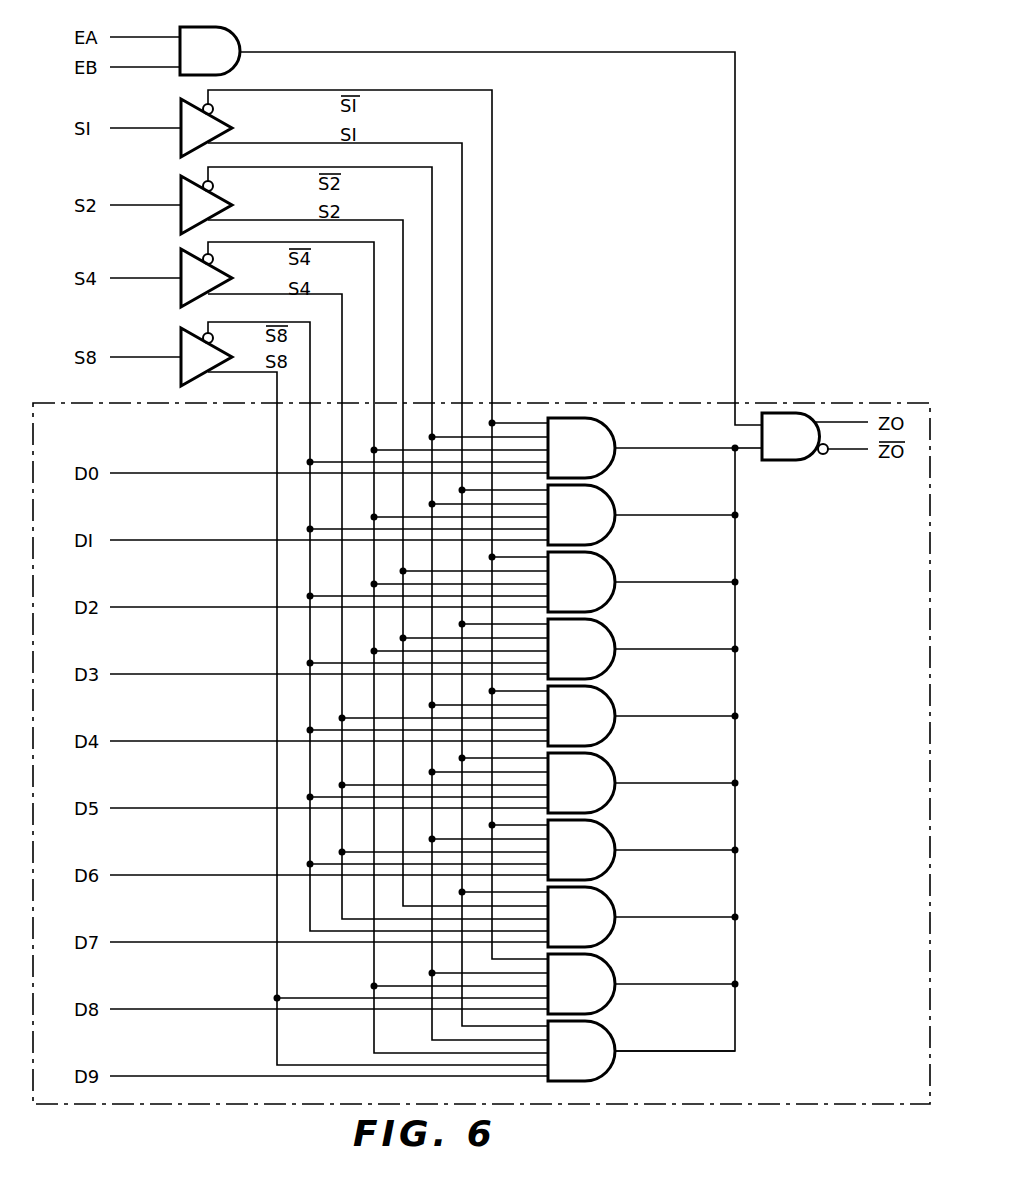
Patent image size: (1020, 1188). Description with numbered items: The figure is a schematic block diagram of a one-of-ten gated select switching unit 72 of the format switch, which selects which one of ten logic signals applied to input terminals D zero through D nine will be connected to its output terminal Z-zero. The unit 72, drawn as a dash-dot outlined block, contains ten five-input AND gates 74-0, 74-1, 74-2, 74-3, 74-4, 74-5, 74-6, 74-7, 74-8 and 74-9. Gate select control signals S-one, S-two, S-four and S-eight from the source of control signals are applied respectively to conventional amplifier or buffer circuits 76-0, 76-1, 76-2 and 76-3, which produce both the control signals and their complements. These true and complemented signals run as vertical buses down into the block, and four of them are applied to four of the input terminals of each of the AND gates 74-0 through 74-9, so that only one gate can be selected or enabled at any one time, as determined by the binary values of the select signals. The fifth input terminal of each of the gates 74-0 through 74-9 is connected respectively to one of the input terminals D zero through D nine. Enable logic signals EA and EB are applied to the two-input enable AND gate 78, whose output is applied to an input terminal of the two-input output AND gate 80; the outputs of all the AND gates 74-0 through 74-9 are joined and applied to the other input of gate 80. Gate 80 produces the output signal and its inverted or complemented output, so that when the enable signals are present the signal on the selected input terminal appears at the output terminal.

The enable AND gate 78 is at (232, 31).
The amplifier or buffer circuit 76-0 is at (225, 123).
The amplifier or buffer circuit 76-1 is at (225, 197).
The amplifier or buffer circuit 76-2 is at (225, 271).
The amplifier or buffer circuit 76-3 is at (204, 376).
The gated select switching unit 72 is at (748, 402).
The output AND gate 80 is at (789, 462).
The five input AND gate 74-0 is at (609, 420).
The five input AND gate 74-1 is at (609, 487).
The five input AND gate 74-2 is at (609, 554).
The five input AND gate 74-3 is at (609, 621).
The five input AND gate 74-4 is at (609, 688).
The five input AND gate 74-5 is at (609, 755).
The five input AND gate 74-6 is at (609, 822).
The five input AND gate 74-7 is at (609, 889).
The five input AND gate 74-8 is at (609, 956).
The five input AND gate 74-9 is at (609, 1023).